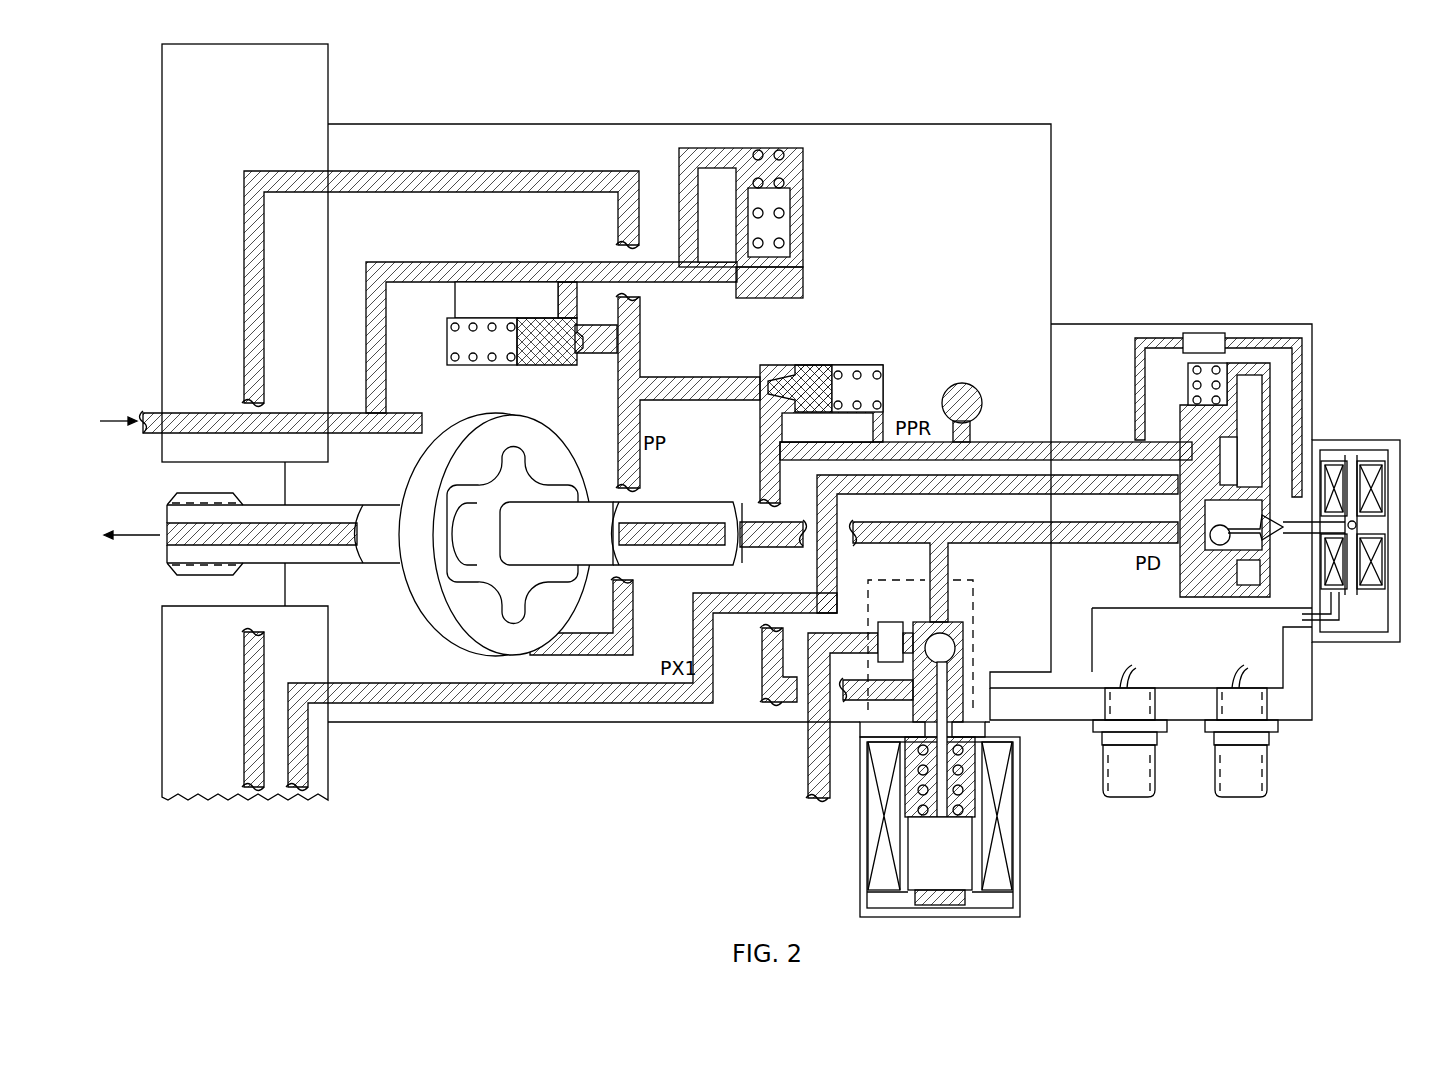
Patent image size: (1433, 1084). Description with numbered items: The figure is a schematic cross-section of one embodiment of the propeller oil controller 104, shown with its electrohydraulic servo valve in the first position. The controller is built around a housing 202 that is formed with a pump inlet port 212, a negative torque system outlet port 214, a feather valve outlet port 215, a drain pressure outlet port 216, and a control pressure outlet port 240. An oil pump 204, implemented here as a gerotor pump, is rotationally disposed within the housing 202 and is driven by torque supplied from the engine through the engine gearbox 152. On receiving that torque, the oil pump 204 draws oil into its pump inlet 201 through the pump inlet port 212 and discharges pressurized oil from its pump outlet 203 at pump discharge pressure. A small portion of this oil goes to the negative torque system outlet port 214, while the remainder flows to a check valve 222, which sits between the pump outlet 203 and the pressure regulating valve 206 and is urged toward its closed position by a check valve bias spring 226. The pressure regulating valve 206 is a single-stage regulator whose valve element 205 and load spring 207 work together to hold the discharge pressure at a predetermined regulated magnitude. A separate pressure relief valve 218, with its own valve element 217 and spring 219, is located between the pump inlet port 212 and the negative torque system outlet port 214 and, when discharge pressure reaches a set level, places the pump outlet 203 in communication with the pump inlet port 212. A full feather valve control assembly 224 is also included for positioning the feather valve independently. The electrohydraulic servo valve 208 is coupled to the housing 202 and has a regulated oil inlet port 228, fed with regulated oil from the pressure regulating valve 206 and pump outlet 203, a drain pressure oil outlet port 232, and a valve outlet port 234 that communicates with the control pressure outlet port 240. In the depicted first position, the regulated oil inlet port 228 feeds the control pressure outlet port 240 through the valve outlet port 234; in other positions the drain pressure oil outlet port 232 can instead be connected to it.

The propeller oil controller 104 is at (1312, 135).
The engine gearbox 152 is at (330, 75).
The pump inlet 201 is at (412, 413).
The housing 202 is at (845, 123).
The pump outlet 203 is at (627, 642).
The oil pump 204 is at (410, 609).
The valve element 205 is at (800, 282).
The pressure regulating valve 206 is at (806, 219).
The load spring 207 is at (784, 181).
The electrohydraulic servo valve 208 is at (1350, 317).
The pump inlet port 212 is at (304, 418).
The negative torque system outlet port 214 is at (378, 171).
The feather valve outlet port 215 is at (812, 752).
The drain pressure outlet port 216 is at (320, 520).
The valve element 217 is at (535, 362).
The pressure relief valve 218 is at (540, 311).
The spring 219 is at (474, 362).
The check valve 222 is at (822, 358).
The full feather valve control assembly 224 is at (1040, 828).
The check valve bias spring 226 is at (880, 378).
The regulated oil inlet port 228 is at (1075, 450).
The drain pressure oil outlet port 232 is at (1083, 545).
The valve outlet port 234 is at (1000, 480).
The control pressure outlet port 240 is at (395, 703).